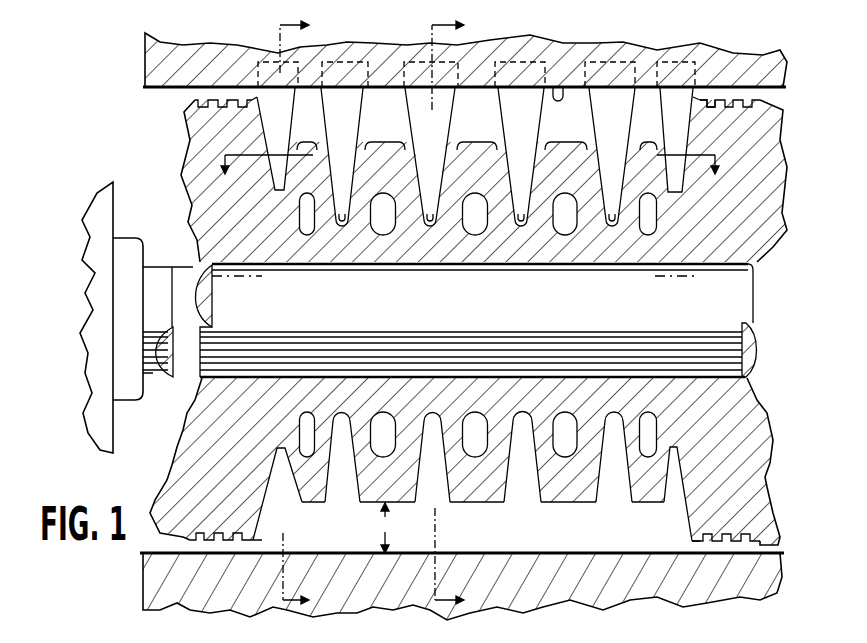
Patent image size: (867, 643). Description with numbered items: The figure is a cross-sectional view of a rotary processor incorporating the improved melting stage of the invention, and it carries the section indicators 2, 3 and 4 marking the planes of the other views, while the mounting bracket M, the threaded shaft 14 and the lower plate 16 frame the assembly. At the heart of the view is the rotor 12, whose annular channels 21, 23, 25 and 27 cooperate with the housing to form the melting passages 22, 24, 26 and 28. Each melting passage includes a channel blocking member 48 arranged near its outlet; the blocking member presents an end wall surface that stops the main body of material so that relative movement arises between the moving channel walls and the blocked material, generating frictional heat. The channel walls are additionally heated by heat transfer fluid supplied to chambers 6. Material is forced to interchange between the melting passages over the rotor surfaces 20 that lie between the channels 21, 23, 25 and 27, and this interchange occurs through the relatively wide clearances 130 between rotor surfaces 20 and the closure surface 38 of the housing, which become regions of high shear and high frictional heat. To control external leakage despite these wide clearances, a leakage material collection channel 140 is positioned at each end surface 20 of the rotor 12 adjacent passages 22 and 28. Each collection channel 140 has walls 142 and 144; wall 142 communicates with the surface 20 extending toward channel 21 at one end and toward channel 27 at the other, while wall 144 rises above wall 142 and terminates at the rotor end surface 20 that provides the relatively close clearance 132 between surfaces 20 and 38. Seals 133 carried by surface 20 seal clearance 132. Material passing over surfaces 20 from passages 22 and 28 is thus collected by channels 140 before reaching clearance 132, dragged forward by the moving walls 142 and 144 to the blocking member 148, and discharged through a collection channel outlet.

The chambers 6 is at (473, 197).
The rotor 12 is at (693, 240).
The threaded rod 14 is at (398, 321).
The lower plate 16 is at (770, 577).
The rotor surfaces 20 is at (247, 97).
The channel 21 is at (342, 412).
The melting passage 22 is at (350, 511).
The channel 23 is at (433, 412).
The nut slot 24 is at (437, 511).
The channel 25 is at (523, 412).
The melting passage 26 is at (538, 511).
The channel 27 is at (614, 412).
The melting passage 28 is at (624, 511).
The closure surface 38 is at (556, 87).
The channel blocking member 48 is at (343, 228).
The clearances 130 is at (397, 533).
The clearance 132 is at (700, 93).
The seals 133 is at (195, 99).
The leakage material collection channel 140 is at (272, 460).
The wall 142 is at (295, 487).
The wall 144 is at (258, 533).
The blocking member 148 is at (271, 70).
The mounting bracket M is at (98, 415).
The section line 2- 2 is at (471, 180).
The section line 3- 3 is at (455, 313).
The section line 4- 4 is at (307, 313).